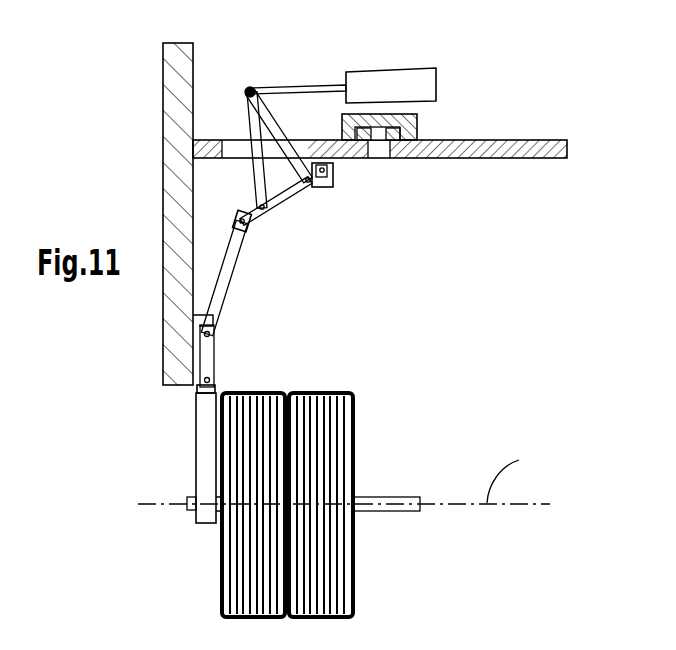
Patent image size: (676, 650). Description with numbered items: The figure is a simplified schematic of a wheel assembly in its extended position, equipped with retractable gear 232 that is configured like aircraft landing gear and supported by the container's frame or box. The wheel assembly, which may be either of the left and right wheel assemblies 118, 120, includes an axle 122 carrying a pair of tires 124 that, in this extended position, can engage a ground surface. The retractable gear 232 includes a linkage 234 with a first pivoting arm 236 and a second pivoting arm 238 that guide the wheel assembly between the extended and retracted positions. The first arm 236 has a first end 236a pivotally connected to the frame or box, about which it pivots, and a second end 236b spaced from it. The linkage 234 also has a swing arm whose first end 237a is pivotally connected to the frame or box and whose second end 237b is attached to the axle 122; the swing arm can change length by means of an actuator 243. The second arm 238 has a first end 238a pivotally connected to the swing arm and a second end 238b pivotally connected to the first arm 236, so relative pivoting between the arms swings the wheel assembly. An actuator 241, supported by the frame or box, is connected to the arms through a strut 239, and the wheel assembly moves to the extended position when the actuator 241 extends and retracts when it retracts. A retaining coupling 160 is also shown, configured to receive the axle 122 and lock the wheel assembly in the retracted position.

The left wheel assembly 118 is at (367, 521).
The right wheel assembly 120 is at (367, 521).
The axle 122 is at (397, 503).
The tire 124 is at (320, 617).
The retaining coupling 160 is at (395, 127).
The retractable gear 232 is at (255, 198).
The linkage 234 is at (255, 198).
The first pivoting arm 236 is at (299, 194).
The first end of first arm 236a is at (334, 172).
The second end of first arm 236b is at (292, 192).
The first end of swing arm 237a is at (206, 342).
The second end of swing arm 237b is at (190, 512).
The second pivoting arm 238 is at (230, 301).
The first end of second arm 238a is at (210, 365).
The second end of second arm 238b is at (243, 250).
The strut 239 is at (258, 181).
The actuator 241 is at (383, 82).
The actuator 243 is at (207, 448).